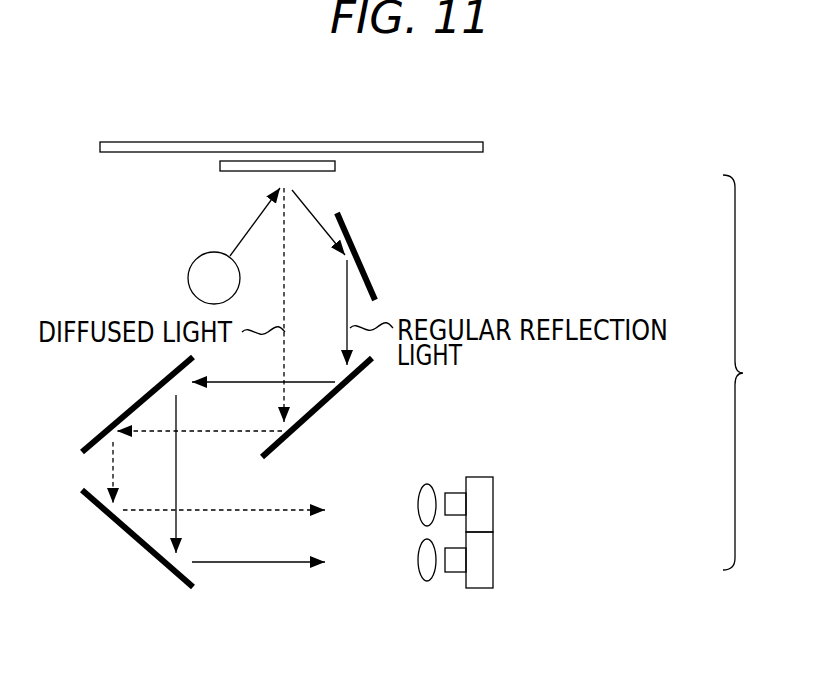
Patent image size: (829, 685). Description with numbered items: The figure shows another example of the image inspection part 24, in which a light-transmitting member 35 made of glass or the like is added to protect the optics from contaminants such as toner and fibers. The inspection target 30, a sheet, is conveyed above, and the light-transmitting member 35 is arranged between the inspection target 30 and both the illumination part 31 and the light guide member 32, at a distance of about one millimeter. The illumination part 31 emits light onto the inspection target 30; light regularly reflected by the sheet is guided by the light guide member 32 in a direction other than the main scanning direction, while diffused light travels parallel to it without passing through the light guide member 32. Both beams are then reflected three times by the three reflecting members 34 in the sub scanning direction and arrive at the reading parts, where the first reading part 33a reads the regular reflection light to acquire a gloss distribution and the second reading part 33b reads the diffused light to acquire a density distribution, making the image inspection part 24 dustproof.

The inspection target 30 is at (435, 148).
The light-transmitting member 35 is at (230, 168).
The illumination part 31 is at (200, 277).
The light guide member 32 is at (360, 257).
The reflecting member 34 is at (122, 415).
The second reading part 33b is at (483, 503).
The first reading part 33a is at (483, 560).
The image inspection part 24 is at (751, 372).